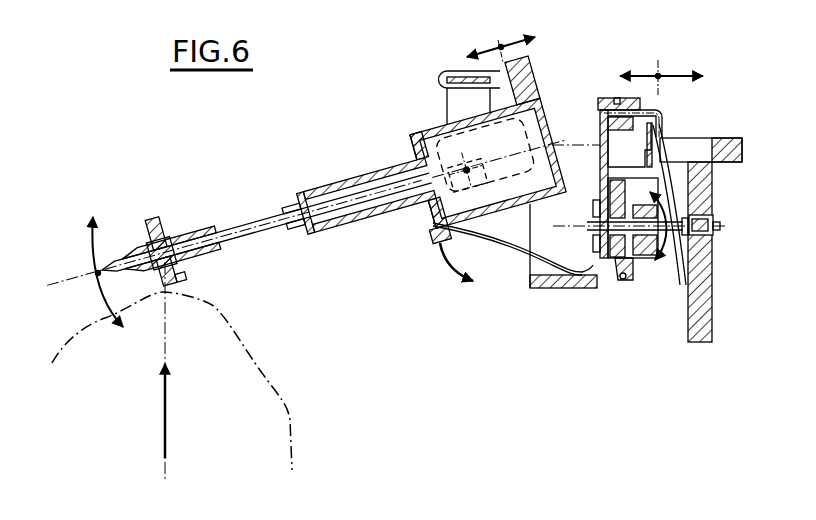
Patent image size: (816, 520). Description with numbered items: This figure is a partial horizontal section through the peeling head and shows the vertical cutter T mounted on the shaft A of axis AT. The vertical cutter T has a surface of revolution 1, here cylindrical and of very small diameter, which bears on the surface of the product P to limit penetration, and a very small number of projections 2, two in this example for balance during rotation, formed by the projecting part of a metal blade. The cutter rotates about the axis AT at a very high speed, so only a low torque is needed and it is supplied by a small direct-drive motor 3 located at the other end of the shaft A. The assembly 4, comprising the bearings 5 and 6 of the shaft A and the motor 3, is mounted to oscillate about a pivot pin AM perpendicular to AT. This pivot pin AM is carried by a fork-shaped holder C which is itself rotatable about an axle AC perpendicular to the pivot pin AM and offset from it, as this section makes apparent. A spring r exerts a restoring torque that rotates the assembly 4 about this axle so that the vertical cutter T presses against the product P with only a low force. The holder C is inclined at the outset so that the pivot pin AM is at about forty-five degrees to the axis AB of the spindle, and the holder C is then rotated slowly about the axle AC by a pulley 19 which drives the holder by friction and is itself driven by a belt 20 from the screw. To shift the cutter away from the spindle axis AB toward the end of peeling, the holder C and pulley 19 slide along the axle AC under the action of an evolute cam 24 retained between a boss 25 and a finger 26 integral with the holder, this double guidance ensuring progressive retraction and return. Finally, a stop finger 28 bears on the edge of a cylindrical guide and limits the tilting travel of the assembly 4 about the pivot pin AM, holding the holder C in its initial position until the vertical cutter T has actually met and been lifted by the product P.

The surface of revolution 1 is at (159, 240).
The projections 2 is at (152, 224).
The direct-drive motor 3 is at (528, 130).
The assembly 4 is at (356, 186).
The bearing 5 is at (305, 197).
The bearing 6 is at (413, 177).
The pulley 19 is at (615, 266).
The belt 20 is at (626, 282).
The evolute cam 24 is at (667, 158).
The boss 25 is at (608, 118).
The finger 26 is at (662, 128).
The stop finger 28 is at (533, 74).
The shaft A is at (254, 221).
The vertical cutter T is at (176, 245).
The axis of vertical cutter AT is at (70, 283).
The axis of spindle AB is at (166, 347).
The pivot pin AM is at (466, 169).
The axle AC is at (567, 228).
The fork-shaped holder C is at (572, 167).
The product P is at (271, 387).
The spring r is at (503, 234).